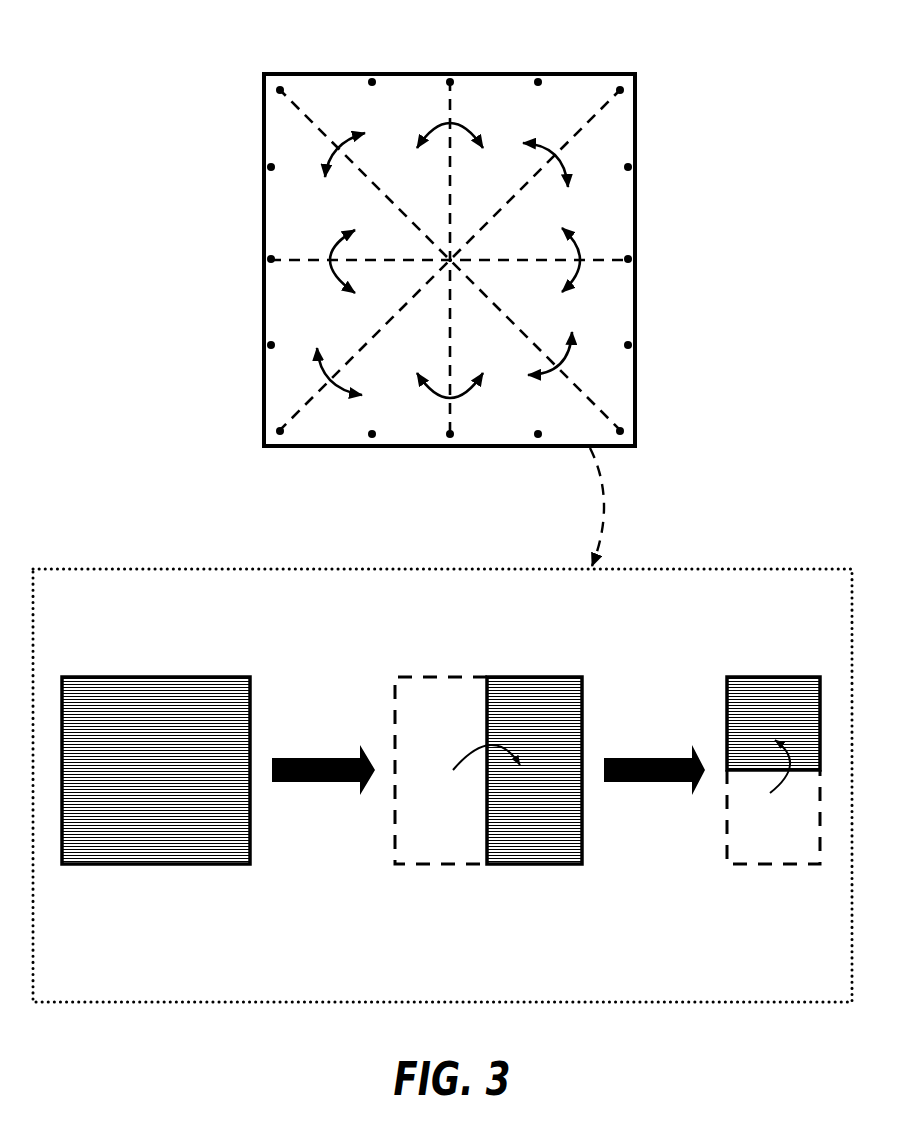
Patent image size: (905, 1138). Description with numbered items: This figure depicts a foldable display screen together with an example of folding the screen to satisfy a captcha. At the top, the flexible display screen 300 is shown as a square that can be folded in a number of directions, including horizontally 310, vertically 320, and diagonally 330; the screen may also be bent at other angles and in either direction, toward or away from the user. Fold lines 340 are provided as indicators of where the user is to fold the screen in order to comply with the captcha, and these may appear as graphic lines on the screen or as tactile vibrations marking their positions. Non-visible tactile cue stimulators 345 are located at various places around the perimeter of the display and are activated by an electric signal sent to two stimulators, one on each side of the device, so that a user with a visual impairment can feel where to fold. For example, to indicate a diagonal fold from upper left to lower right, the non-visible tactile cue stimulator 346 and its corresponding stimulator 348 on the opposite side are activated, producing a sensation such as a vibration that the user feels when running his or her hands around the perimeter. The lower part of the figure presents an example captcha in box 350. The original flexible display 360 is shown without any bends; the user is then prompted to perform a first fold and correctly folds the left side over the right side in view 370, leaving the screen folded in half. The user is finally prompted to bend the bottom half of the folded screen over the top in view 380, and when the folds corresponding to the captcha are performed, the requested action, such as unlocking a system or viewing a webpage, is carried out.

The flexible display screen 300 is at (245, 88).
The horizontal fold direction 310 is at (293, 250).
The vertical fold direction 320 is at (449, 103).
The diagonal fold direction 330 is at (593, 113).
The fold lines 340 is at (585, 422).
The non-visible tactile cue stimulators 345 is at (268, 170).
The non-visible tactile cue stimulator 346 is at (281, 87).
The corresponding stimulator 348 is at (623, 428).
The example captcha box 350 is at (633, 982).
The original flexible display 360 is at (138, 660).
The first fold view 370 is at (480, 663).
The final fold view 380 is at (773, 660).